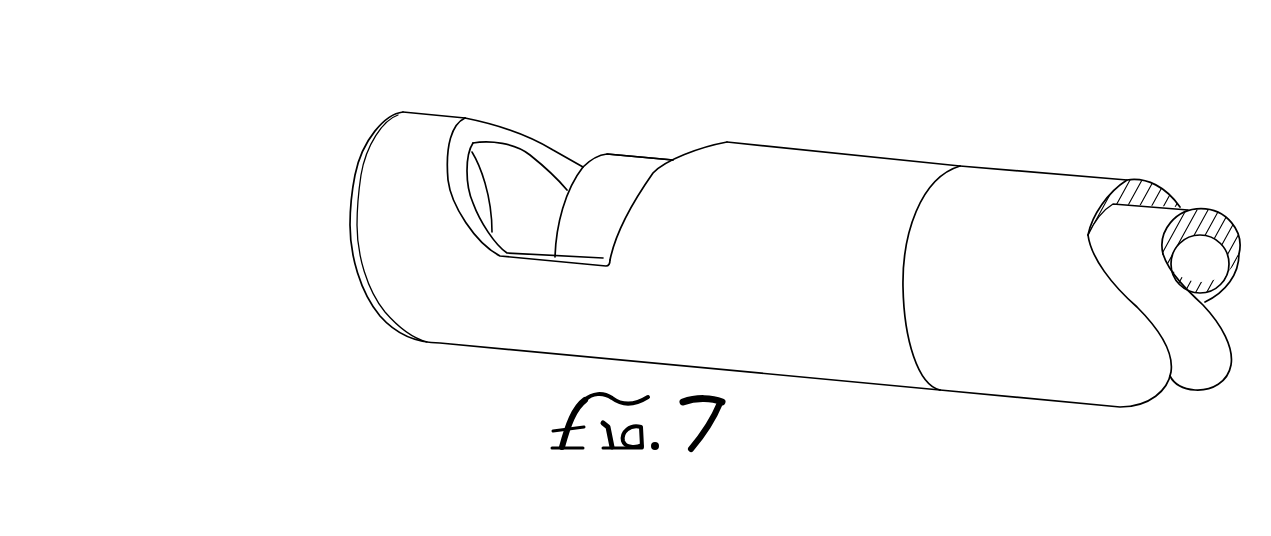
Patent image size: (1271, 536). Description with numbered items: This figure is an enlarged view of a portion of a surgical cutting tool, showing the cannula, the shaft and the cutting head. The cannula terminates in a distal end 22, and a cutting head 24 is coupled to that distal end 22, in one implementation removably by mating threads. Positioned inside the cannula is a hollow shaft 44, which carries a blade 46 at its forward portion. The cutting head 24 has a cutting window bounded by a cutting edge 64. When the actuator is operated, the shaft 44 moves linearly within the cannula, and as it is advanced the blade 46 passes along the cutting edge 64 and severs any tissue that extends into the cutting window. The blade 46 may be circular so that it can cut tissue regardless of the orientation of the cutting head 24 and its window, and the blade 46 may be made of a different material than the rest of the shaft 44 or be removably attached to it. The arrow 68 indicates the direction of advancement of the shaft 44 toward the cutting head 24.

The distal end 22 is at (1022, 210).
The cutting head 24 is at (795, 190).
The hollow shaft 44 is at (638, 174).
The blade 46 is at (591, 175).
The cutting edge 64 is at (473, 133).
The opening 68 is at (615, 100).